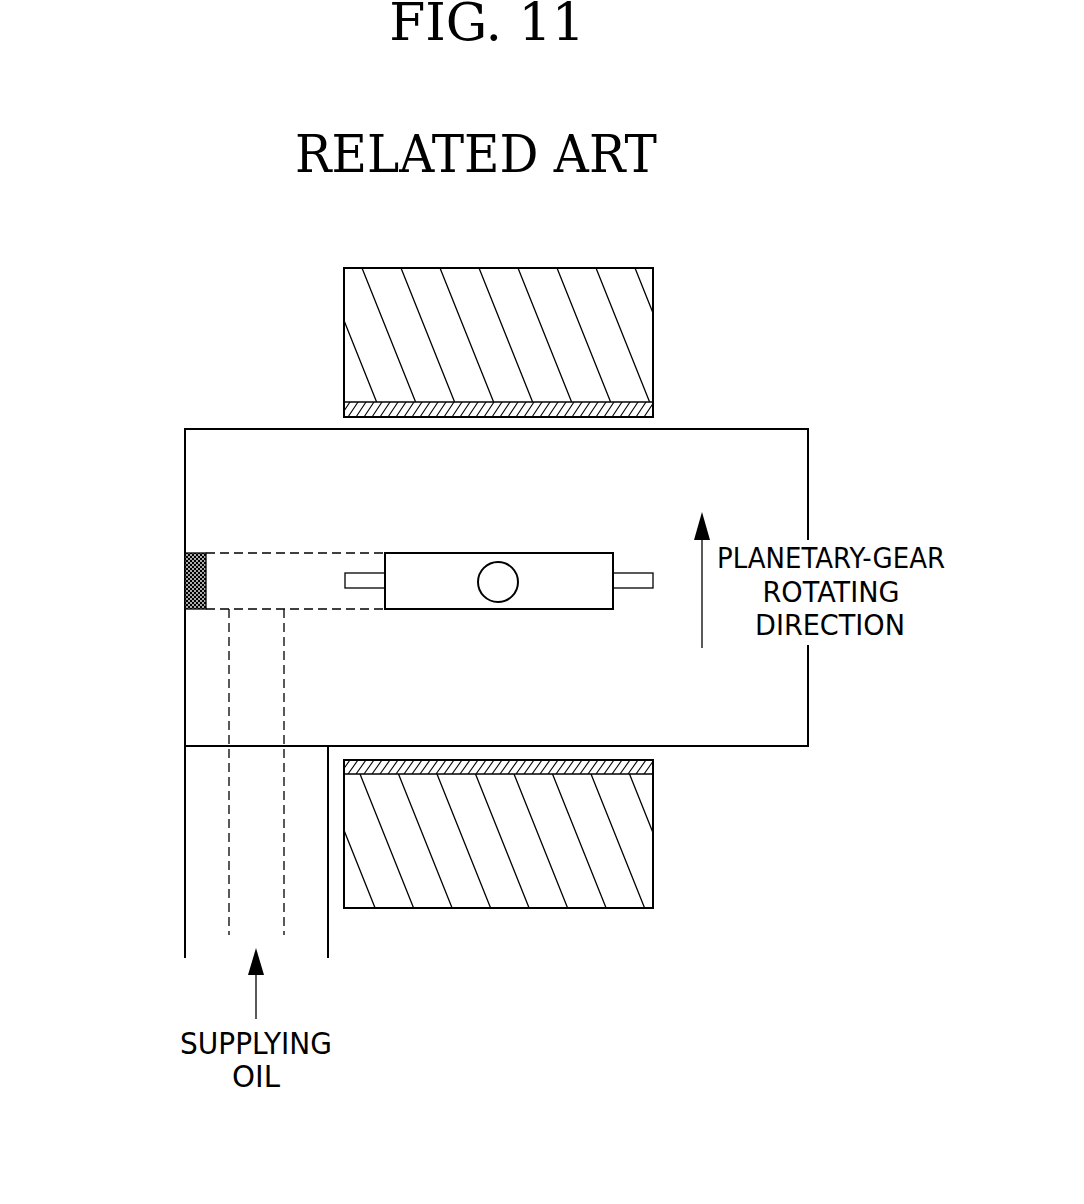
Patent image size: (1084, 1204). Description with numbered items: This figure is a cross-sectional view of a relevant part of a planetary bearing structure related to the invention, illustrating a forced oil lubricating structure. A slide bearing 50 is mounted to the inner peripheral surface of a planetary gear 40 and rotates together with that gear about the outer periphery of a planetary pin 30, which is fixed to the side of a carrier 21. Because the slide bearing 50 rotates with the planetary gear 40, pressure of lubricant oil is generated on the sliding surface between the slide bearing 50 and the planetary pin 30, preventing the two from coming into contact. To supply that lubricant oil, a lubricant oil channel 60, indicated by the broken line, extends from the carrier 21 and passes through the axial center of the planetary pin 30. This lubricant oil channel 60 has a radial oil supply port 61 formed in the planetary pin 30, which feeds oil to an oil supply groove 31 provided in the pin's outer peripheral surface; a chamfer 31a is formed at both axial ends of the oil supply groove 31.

The carrier 21 is at (185, 791).
The planetary pin 30 is at (778, 461).
The oil supply groove 31 is at (575, 568).
The chamfer 31a is at (632, 578).
The planetary gear 40 is at (653, 307).
The slide bearing 50 is at (653, 407).
The lubricant oil channel 60 is at (262, 553).
The oil supply port 61 is at (498, 572).